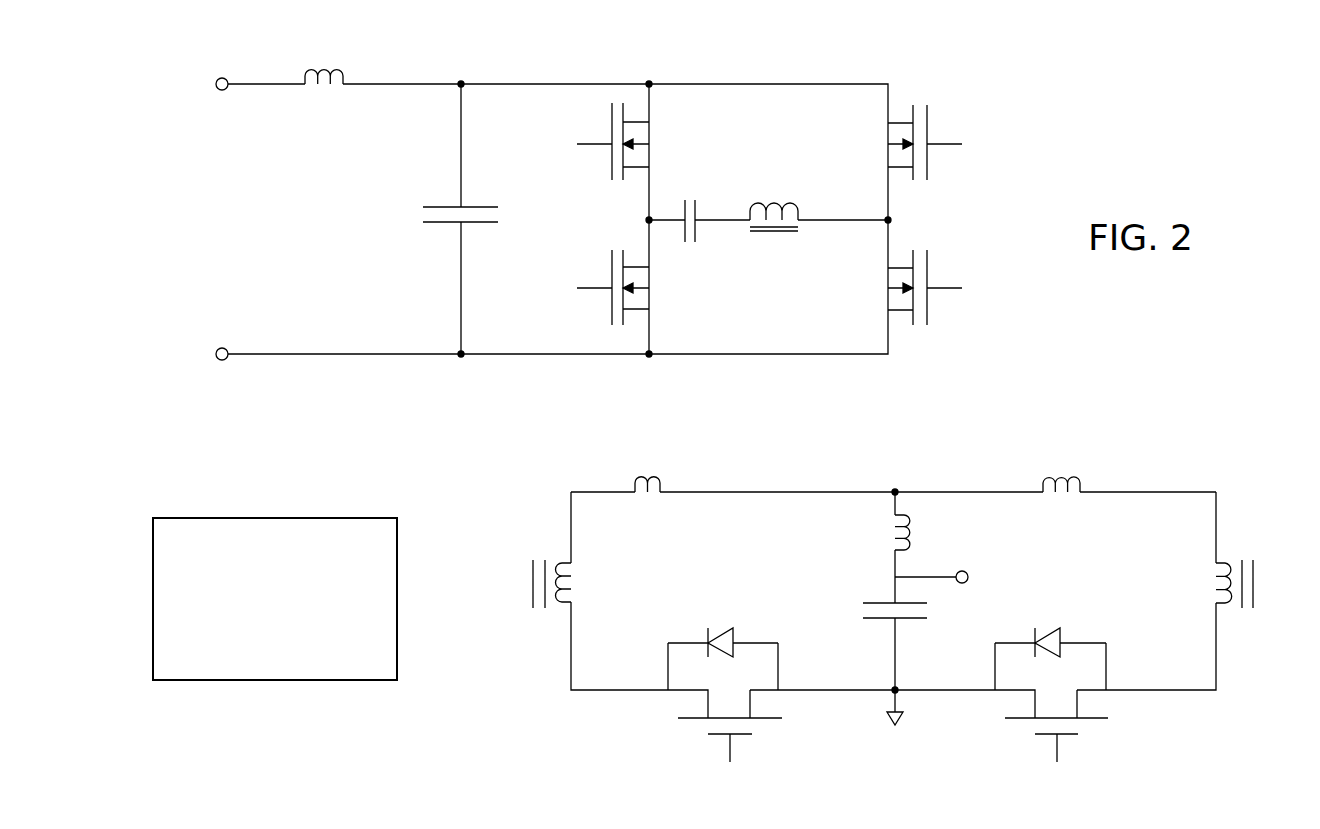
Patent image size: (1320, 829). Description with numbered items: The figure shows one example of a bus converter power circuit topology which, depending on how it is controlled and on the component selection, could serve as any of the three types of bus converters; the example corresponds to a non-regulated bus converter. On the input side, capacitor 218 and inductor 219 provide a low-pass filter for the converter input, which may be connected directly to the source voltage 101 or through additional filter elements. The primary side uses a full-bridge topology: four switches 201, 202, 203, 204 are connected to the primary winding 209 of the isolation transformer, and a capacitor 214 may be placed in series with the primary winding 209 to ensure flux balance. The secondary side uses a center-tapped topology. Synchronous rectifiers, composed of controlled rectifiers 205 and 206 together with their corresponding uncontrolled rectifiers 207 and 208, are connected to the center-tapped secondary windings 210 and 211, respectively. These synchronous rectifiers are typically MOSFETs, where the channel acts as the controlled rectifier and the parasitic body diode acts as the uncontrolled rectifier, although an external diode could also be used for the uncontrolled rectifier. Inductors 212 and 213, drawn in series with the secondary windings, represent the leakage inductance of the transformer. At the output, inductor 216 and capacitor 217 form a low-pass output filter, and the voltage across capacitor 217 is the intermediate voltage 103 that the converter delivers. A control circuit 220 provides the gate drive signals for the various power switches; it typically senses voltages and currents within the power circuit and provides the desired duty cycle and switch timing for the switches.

The source voltage 101 is at (224, 222).
The intermediate voltage 103 is at (1029, 567).
The switch 201 is at (659, 131).
The switch 202 is at (661, 298).
The switch 203 is at (881, 297).
The switch 204 is at (874, 132).
The controlled rectifier 205 is at (689, 744).
The controlled rectifier 206 is at (1016, 744).
The uncontrolled rectifier 207 is at (717, 614).
The uncontrolled rectifier 208 is at (1069, 631).
The primary winding 209 is at (776, 199).
The secondary winding 210 is at (556, 539).
The secondary winding 211 is at (1244, 547).
The inductor 212 is at (651, 462).
The inductor 213 is at (1076, 462).
The capacitor 214 is at (704, 196).
The inductor 216 is at (881, 528).
The capacitor 217 is at (859, 612).
The capacitor 218 is at (436, 251).
The inductor 219 is at (329, 56).
The control circuit 220 is at (263, 698).